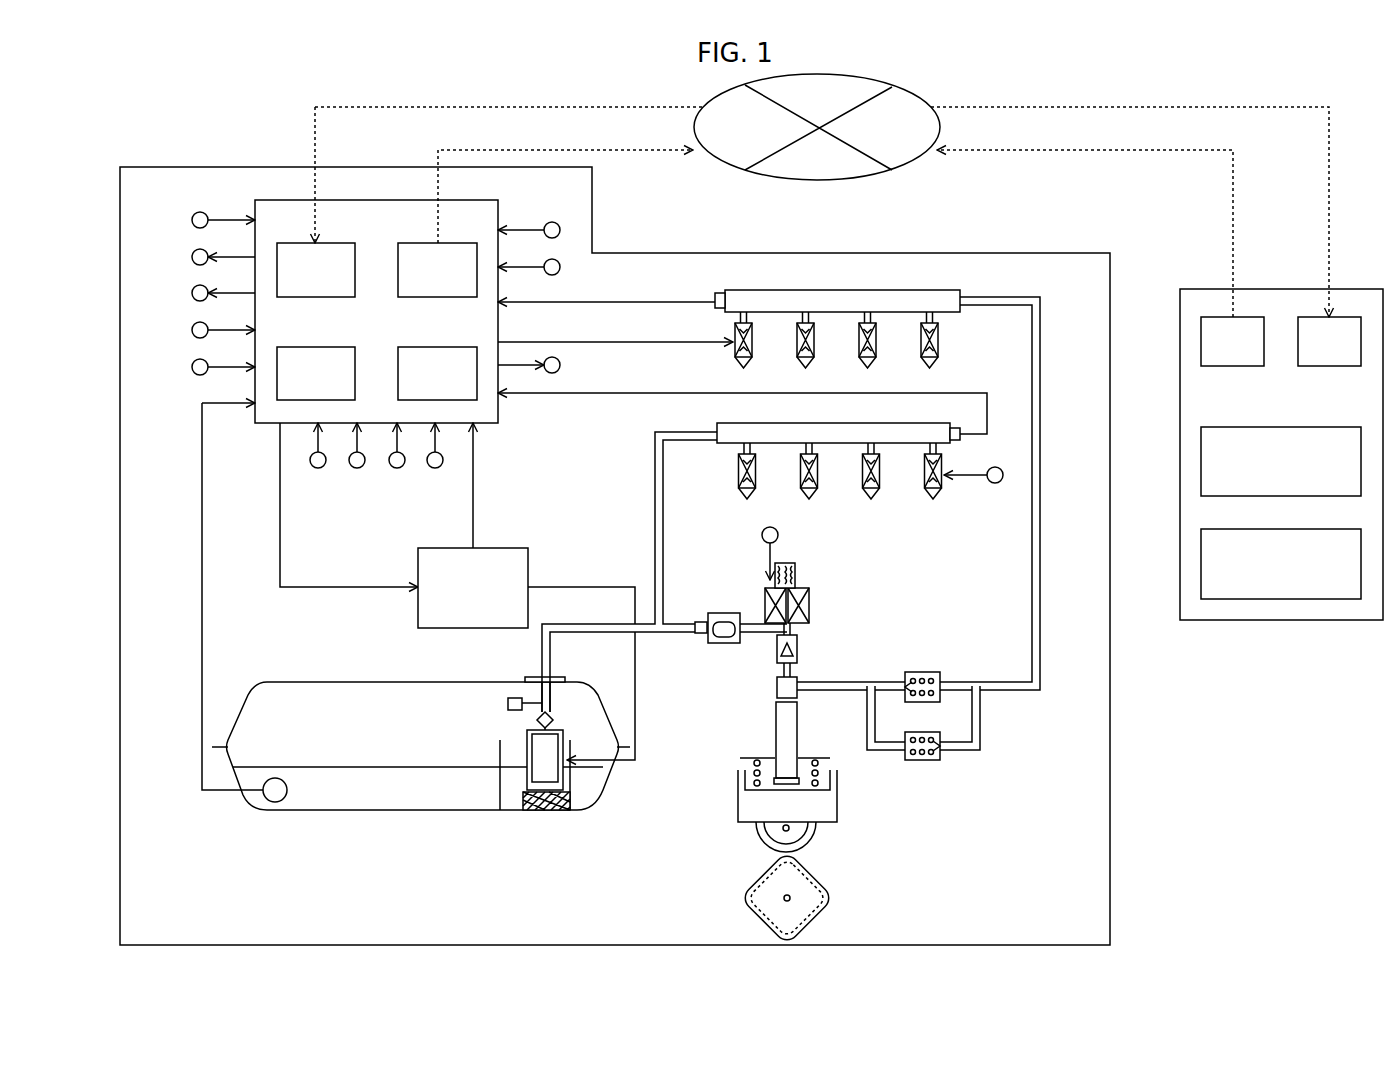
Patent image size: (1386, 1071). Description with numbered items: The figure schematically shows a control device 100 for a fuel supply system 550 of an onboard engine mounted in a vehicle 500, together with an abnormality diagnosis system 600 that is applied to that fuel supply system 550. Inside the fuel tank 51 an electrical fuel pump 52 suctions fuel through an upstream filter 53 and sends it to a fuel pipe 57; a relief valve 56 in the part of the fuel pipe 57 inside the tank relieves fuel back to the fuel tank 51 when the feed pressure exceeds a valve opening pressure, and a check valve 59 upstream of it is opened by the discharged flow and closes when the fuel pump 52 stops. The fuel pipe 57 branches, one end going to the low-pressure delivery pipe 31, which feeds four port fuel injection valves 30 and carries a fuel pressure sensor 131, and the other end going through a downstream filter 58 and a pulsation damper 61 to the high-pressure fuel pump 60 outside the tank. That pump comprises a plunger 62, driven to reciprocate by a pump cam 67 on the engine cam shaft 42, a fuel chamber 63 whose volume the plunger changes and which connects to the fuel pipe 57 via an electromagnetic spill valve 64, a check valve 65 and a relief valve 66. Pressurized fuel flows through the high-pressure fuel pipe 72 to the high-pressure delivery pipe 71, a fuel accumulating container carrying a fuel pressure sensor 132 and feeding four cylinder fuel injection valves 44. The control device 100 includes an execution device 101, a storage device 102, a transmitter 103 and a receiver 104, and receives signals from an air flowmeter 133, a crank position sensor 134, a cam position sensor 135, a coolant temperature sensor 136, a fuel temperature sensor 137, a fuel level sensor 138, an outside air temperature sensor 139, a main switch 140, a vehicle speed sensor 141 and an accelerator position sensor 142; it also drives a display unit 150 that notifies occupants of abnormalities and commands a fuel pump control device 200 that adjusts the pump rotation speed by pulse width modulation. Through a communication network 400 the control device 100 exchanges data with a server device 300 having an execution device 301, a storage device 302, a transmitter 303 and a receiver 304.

The abnormality diagnosis system 600 is at (1126, 87).
The vehicle 500 is at (1082, 253).
The communication network 400 is at (912, 93).
The server device 300 is at (1355, 289).
The execution device 301 is at (1290, 529).
The storage device 302 is at (1290, 427).
The transmitter 303 is at (1258, 366).
The receiver 304 is at (1354, 366).
The control device 100 is at (452, 199).
The execution device 101 is at (330, 347).
The storage device 102 is at (450, 347).
The transmitter 103 is at (450, 243).
The receiver 104 is at (330, 243).
The air flowmeter 133 is at (318, 469).
The crank position sensor 134 is at (357, 469).
The cam position sensor 135 is at (397, 469).
The coolant temperature sensor 136 is at (435, 469).
The fuel temperature sensor 137 is at (287, 803).
The fuel level sensor 138 is at (195, 323).
The outside air temperature sensor 139 is at (195, 360).
The main switch 140 is at (195, 212).
The vehicle speed sensor 141 is at (553, 221).
The accelerator position sensor 142 is at (560, 268).
The display unit 150 is at (195, 250).
The fuel pump control device 200 is at (498, 547).
The port fuel injection valve 30 is at (195, 286).
The low-pressure delivery pipe 31 is at (753, 423).
The fuel pressure sensor 131 is at (953, 427).
The cylinder fuel injection valve 44 is at (752, 338).
The high-pressure delivery pipe 71 is at (923, 290).
The fuel pressure sensor 132 is at (716, 291).
The high-pressure fuel pipe 72 is at (1041, 562).
The fuel tank 51 is at (293, 682).
The fuel pump 52 is at (523, 752).
The upstream filter 53 is at (522, 797).
The relief valve 56 is at (507, 703).
The fuel pipe 57 is at (672, 633).
The downstream filter 58 is at (702, 635).
The check valve 59 is at (555, 722).
The high-pressure fuel pump 60 is at (873, 830).
The pulsation damper 61 is at (718, 600).
The plunger 62 is at (798, 733).
The fuel chamber 63 is at (776, 690).
The electromagnetic spill valve 64 is at (561, 366).
The check valve 65 is at (922, 670).
The relief valve 66 is at (922, 761).
The pump cam 67 is at (832, 897).
The cam shaft 42 is at (745, 897).
The fuel supply system 550 is at (1012, 748).